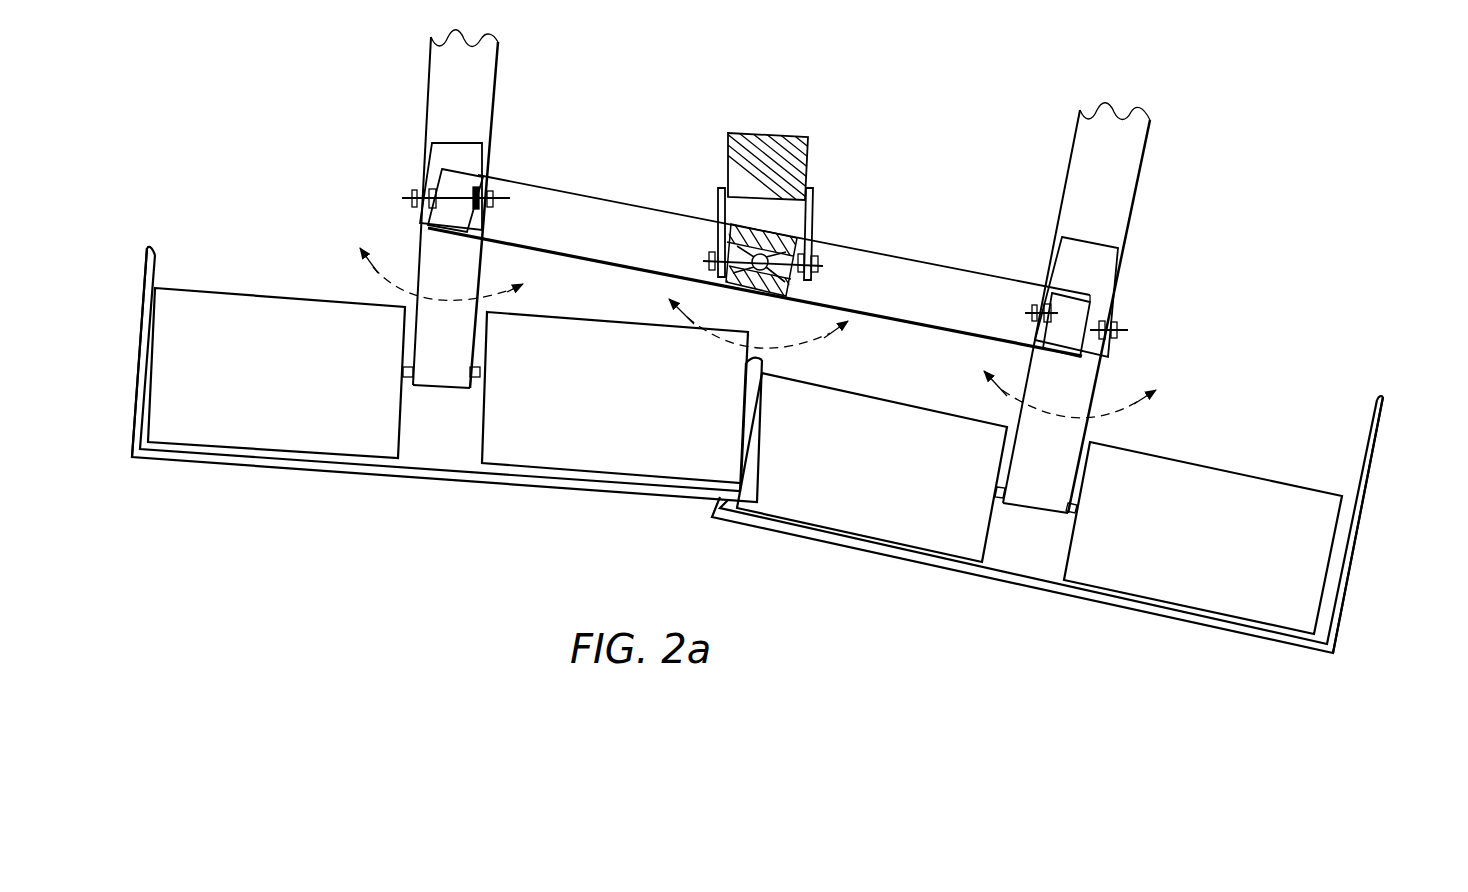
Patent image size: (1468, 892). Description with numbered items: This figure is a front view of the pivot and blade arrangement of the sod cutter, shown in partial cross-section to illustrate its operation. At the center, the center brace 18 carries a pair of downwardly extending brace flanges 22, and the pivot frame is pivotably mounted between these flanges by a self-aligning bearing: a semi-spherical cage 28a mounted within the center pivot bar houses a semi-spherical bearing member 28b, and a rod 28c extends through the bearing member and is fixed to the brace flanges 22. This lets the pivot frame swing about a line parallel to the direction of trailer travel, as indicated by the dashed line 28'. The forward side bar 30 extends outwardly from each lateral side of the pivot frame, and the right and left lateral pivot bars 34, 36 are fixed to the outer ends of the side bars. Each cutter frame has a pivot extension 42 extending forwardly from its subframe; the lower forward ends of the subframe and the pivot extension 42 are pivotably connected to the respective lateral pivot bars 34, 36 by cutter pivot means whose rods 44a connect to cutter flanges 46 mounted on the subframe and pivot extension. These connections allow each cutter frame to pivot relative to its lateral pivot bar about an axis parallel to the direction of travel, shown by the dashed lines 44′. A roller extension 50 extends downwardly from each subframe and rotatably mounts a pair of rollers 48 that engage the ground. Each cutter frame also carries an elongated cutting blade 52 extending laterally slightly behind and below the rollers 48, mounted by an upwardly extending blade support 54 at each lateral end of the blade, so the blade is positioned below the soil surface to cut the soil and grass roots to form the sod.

The center brace 18 is at (782, 133).
The brace flanges 22 is at (720, 193).
The semi-spherical cage 28a is at (787, 283).
The semi-spherical bearing member 28b is at (818, 250).
The rod 28c is at (717, 240).
The dashed line 28' is at (775, 333).
The forward side bar 30 is at (912, 257).
The right lateral pivot bar 34 is at (434, 219).
The left lateral pivot bar 36 is at (1092, 303).
The pivot extension 42 is at (497, 56).
The rods 44a is at (508, 205).
The dashed lines 44′ is at (358, 268).
The cutter flanges 46 is at (423, 158).
The rollers 48 is at (296, 386).
The roller extension 50 is at (480, 262).
The cutting blade 52 is at (432, 473).
The blade support 54 is at (143, 313).